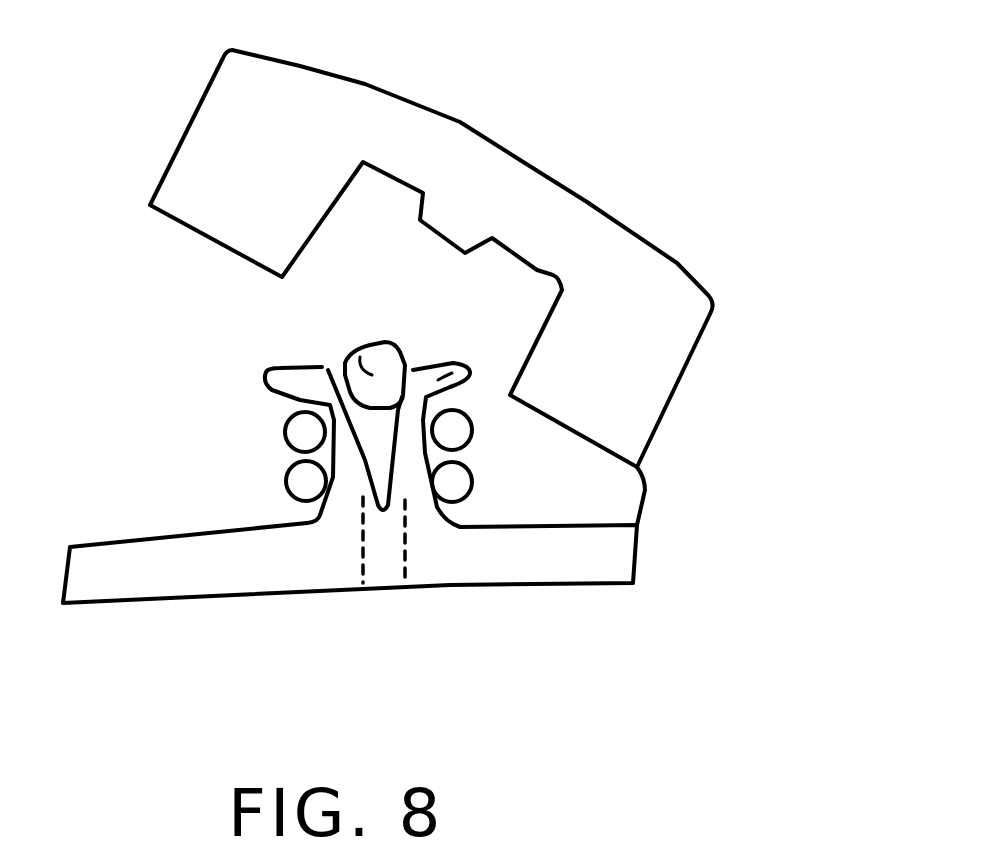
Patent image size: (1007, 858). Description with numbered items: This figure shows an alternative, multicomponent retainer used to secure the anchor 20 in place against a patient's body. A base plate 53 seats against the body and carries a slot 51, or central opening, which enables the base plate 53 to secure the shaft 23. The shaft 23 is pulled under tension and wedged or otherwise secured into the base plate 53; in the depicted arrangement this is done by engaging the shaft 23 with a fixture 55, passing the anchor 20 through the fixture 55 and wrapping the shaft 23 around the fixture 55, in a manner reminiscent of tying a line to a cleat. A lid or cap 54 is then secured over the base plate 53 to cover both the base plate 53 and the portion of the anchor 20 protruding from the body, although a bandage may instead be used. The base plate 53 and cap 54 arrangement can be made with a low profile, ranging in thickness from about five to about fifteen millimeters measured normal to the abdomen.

The anchor 20 is at (350, 352).
The shaft 23 is at (303, 490).
The slot 51 is at (395, 603).
The base plate 53 is at (573, 558).
The cap 54 is at (660, 277).
The fixture 55 is at (460, 365).